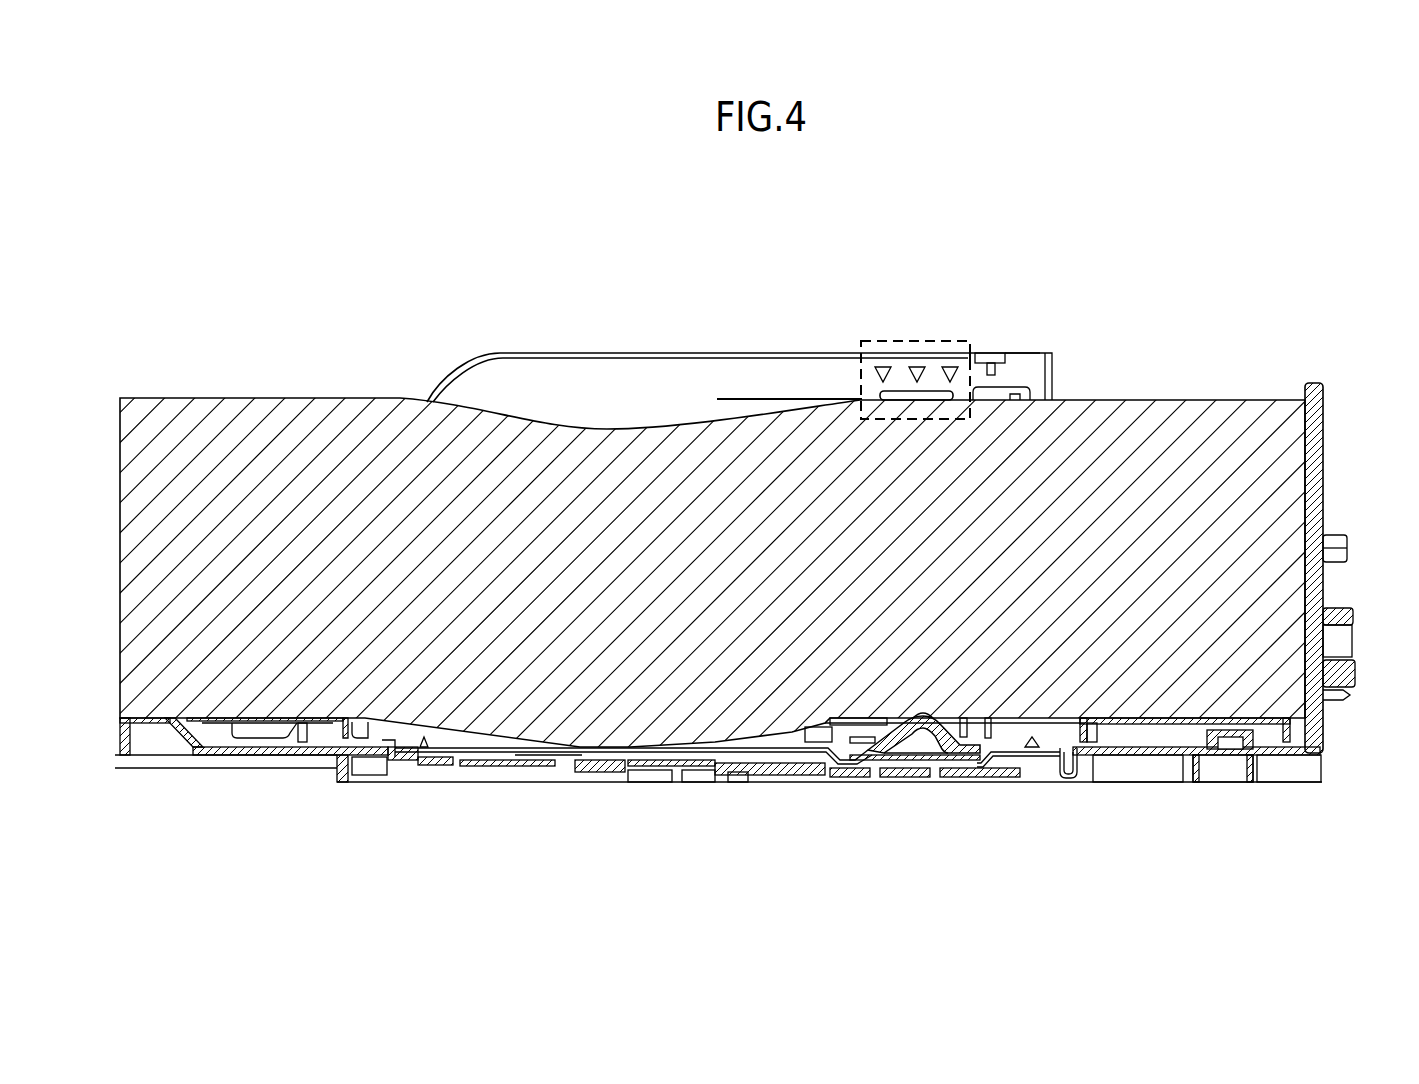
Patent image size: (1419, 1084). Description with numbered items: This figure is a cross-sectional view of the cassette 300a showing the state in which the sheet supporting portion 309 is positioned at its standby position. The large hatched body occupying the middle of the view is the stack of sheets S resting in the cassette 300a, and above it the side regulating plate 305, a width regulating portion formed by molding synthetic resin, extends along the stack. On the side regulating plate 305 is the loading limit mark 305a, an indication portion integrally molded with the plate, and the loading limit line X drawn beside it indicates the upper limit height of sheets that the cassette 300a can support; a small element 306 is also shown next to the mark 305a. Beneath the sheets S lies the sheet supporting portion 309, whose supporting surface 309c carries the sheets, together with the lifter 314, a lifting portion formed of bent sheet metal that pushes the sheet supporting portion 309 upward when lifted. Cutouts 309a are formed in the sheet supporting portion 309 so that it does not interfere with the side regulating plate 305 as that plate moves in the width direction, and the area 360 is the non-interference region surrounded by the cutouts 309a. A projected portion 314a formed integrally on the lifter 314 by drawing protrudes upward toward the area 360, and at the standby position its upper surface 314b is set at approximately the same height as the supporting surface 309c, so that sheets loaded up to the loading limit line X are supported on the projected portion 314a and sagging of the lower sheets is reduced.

The cassette 300a is at (1330, 354).
The side regulating plate 305 is at (585, 383).
The loading limit mark 305a is at (861, 341).
The holding member 306 is at (997, 351).
The sheet supporting portion 309 is at (350, 725).
The cutout 309a is at (390, 728).
The supporting surface 309c is at (1085, 710).
The lifter 314 is at (975, 768).
The projected portion 314a is at (903, 762).
The upper surface 314b is at (932, 757).
The area 360 is at (806, 736).
The sheet S is at (1160, 428).
The loading limit line X is at (775, 398).